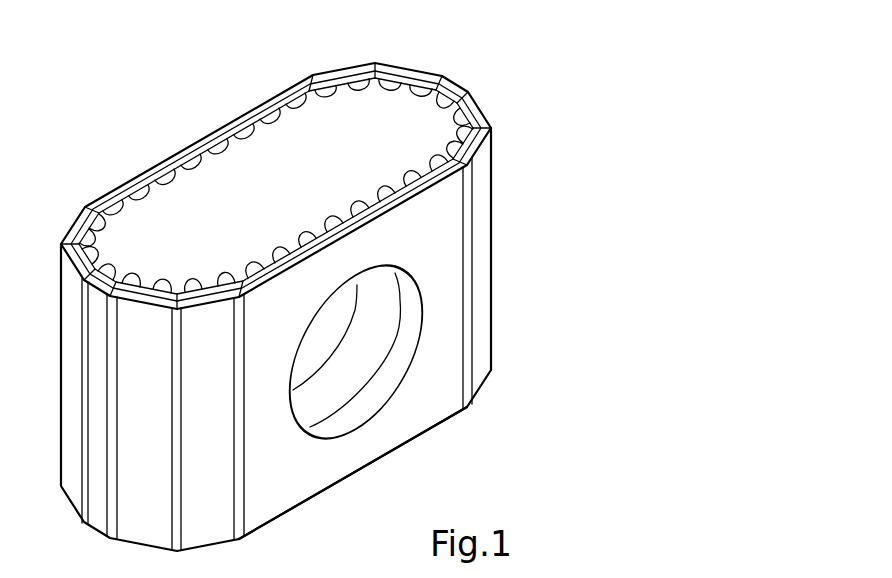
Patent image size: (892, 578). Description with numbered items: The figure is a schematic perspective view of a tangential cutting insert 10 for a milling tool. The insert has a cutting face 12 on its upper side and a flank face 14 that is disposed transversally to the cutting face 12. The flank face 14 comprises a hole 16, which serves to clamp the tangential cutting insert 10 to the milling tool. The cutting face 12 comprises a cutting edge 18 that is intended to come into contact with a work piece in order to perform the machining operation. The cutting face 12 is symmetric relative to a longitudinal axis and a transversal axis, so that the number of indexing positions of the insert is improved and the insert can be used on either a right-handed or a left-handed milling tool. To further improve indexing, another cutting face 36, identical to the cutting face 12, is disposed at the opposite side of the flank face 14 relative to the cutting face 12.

The tangential cutting insert 10 is at (502, 52).
The cutting face 12 is at (188, 203).
The flank face 14 is at (443, 228).
The hole 16 is at (401, 355).
The cutting edge 18 is at (248, 110).
The cutting face 36 is at (332, 487).